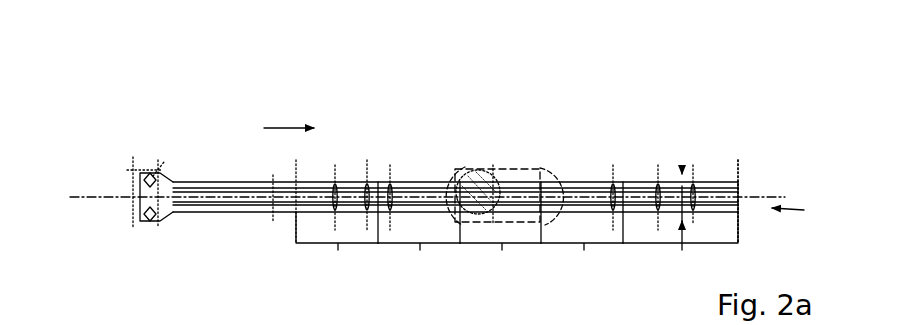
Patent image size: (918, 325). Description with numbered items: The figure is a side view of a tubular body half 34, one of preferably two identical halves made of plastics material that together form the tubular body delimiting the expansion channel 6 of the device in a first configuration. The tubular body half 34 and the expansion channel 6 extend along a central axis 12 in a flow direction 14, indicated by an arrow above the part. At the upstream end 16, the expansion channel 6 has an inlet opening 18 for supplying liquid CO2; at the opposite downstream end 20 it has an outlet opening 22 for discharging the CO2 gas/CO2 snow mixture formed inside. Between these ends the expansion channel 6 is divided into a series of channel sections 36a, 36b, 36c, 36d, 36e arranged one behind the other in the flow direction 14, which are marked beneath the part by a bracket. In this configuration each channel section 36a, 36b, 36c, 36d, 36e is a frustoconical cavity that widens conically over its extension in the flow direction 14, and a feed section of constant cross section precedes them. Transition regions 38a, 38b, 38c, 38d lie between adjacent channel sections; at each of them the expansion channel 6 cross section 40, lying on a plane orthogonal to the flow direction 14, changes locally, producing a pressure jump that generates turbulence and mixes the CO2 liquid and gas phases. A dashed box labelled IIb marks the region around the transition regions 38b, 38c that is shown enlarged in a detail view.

The tubular body half 34 is at (436, 66).
The central axis 12 is at (97, 199).
The expansion channel 6 is at (710, 193).
The upstream end 16 is at (95, 181).
The inlet opening 18 is at (160, 222).
The flow direction 14 is at (289, 127).
The detail view region IIb is at (502, 168).
The transition region 38a is at (380, 172).
The transition region 38b is at (462, 172).
The transition region 38c is at (543, 172).
The transition region 38d is at (626, 172).
The expansion channel cross section 40 is at (683, 172).
The outlet opening 22 is at (740, 193).
The downstream end 20 is at (802, 213).
The channel section 36a is at (337, 244).
The channel section 36b is at (419, 260).
The channel section 36c is at (500, 260).
The channel section 36d is at (582, 260).
The channel section 36e is at (680, 244).